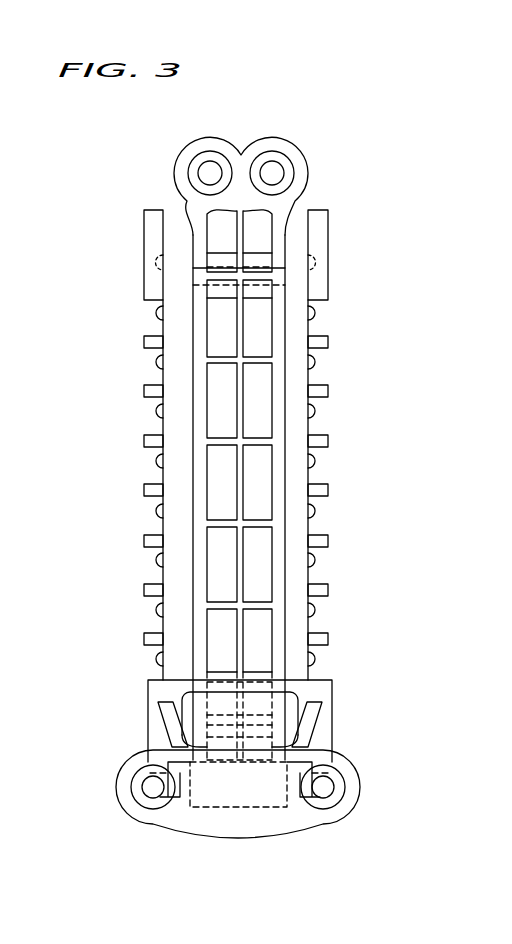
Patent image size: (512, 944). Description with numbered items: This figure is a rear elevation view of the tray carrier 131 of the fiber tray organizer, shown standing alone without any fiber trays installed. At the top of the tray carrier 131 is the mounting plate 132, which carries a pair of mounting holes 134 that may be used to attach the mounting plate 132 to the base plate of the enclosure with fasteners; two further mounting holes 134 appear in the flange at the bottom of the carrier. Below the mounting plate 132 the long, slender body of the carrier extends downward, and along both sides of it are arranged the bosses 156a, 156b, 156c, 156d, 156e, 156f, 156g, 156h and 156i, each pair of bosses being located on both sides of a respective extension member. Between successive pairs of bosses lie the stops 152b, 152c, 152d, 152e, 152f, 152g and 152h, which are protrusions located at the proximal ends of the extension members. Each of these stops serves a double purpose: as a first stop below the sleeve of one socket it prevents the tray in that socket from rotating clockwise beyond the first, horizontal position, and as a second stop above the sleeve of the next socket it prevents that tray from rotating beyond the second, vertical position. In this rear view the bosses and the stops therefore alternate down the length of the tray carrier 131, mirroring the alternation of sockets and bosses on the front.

The tray carrier 131 is at (114, 152).
The mounting plate 132 is at (312, 174).
The mounting holes 134 is at (270, 162).
The stop 152b is at (144, 342).
The stop 152c is at (144, 391).
The stop 152d is at (144, 441).
The stop 152e is at (144, 490).
The stop 152f is at (144, 541).
The stop 152g is at (144, 590).
The stop 152h is at (144, 639).
The bosses 156a is at (318, 263).
The bosses 156b is at (156, 313).
The bosses 156c is at (156, 362).
The bosses 156d is at (156, 411).
The bosses 156e is at (156, 461).
The bosses 156f is at (156, 511).
The bosses 156g is at (156, 560).
The bosses 156h is at (156, 610).
The bosses 156i is at (156, 659).